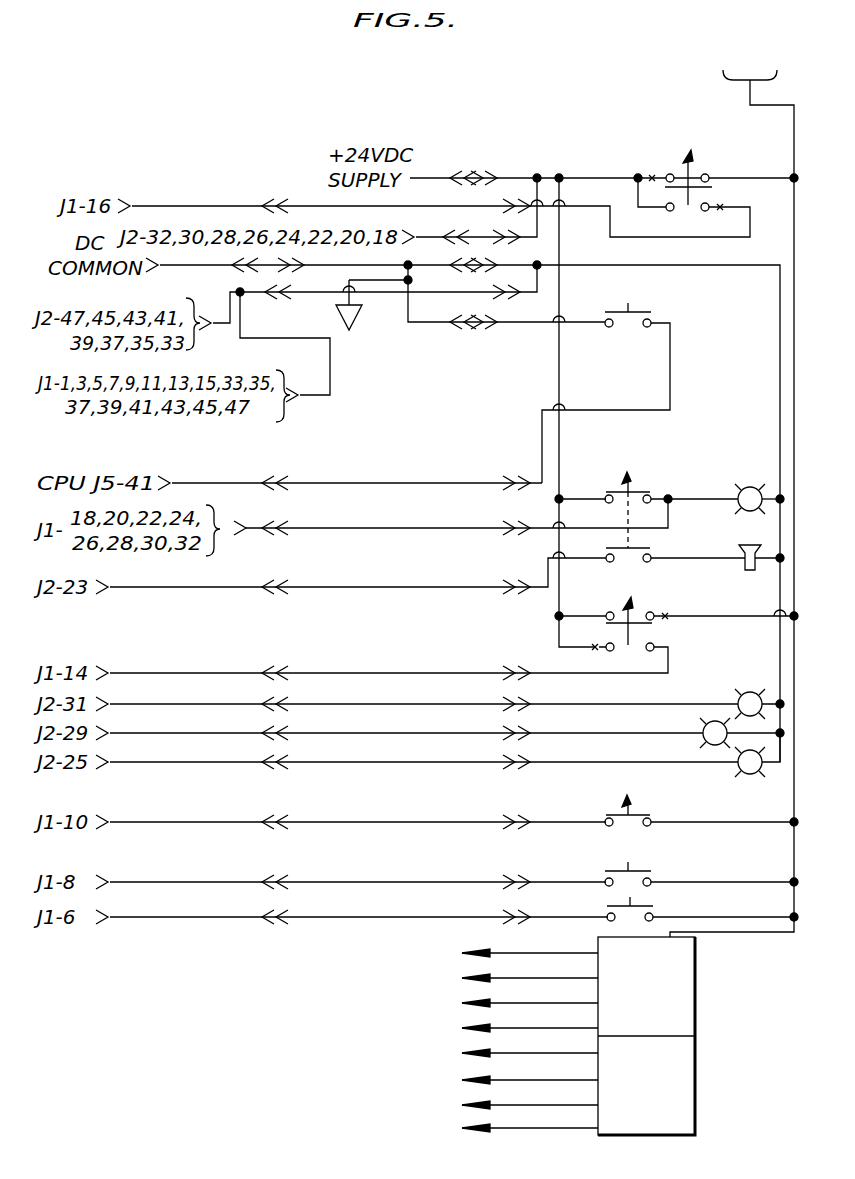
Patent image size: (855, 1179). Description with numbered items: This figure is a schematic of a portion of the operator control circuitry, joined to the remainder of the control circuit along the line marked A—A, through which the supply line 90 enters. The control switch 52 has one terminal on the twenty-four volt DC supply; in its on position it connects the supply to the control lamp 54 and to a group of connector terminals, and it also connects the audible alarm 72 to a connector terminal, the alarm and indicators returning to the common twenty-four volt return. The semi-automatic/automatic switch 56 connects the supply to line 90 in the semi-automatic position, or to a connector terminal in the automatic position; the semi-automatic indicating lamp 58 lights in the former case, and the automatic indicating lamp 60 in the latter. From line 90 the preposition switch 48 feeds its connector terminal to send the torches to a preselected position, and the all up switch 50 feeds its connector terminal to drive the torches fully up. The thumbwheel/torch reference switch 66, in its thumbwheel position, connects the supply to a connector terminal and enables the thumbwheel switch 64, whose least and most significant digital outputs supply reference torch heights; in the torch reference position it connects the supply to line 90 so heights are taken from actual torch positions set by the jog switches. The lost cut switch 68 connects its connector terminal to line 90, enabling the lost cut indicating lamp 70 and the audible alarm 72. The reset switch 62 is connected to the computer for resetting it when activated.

The preposition switch 48 is at (655, 911).
The all up switch 50 is at (655, 878).
The control switch 52 is at (553, 481).
The control indicator 54 is at (742, 487).
The semi-automatic/automatic switch 56 is at (671, 135).
The semi-automatic indicator 58 is at (724, 750).
The automatic indicator 60 is at (760, 690).
The reset switch 62 is at (652, 311).
The thumbwheel switch 64 is at (697, 1009).
The thumbwheel/torch switch 66 is at (577, 605).
The lost cut switch 68 is at (568, 783).
The lost cut indicating lamp 70 is at (757, 780).
The audible alarm 72 is at (738, 554).
The line 90 is at (794, 118).